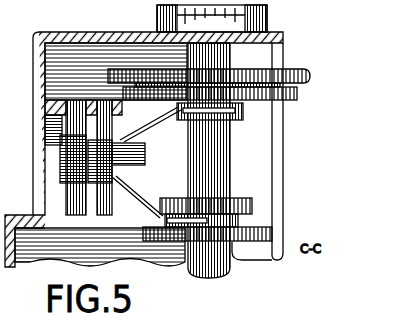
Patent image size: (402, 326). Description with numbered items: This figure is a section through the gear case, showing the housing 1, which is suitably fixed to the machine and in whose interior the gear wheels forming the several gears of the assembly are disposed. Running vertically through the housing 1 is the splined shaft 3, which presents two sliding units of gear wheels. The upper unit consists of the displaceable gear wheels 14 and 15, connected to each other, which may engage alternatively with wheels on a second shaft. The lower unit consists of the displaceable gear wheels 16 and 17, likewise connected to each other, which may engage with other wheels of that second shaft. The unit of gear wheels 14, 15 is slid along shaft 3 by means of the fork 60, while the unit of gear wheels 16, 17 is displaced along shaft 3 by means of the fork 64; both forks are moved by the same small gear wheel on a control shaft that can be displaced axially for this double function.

The housing 1 is at (33, 166).
The shaft 3 is at (228, 156).
The displaceable gear wheel 14 is at (293, 100).
The displaceable gear wheel 15 is at (295, 69).
The displaceable gear wheel 16 is at (250, 198).
The displaceable gear wheel 17 is at (243, 241).
The fork 60 is at (162, 128).
The fork 64 is at (136, 203).